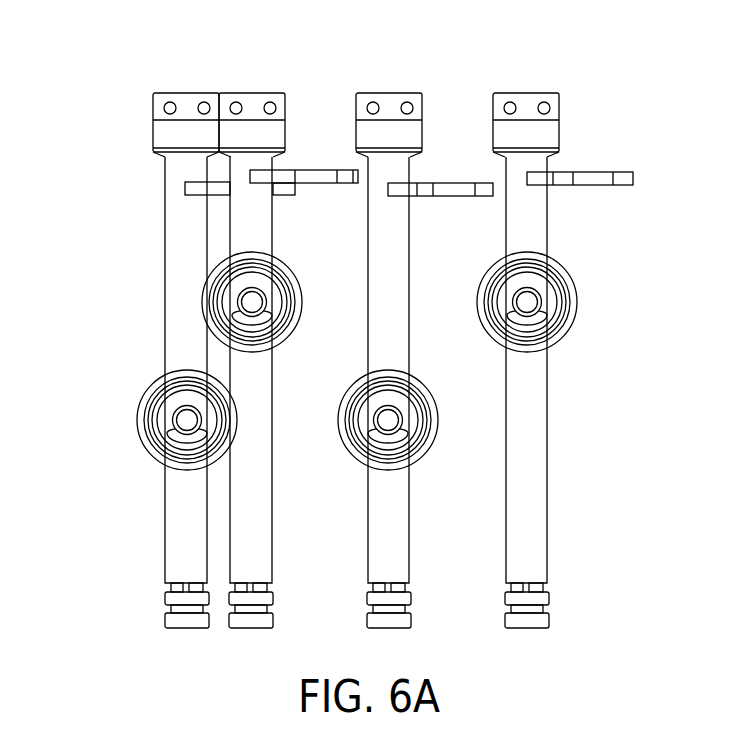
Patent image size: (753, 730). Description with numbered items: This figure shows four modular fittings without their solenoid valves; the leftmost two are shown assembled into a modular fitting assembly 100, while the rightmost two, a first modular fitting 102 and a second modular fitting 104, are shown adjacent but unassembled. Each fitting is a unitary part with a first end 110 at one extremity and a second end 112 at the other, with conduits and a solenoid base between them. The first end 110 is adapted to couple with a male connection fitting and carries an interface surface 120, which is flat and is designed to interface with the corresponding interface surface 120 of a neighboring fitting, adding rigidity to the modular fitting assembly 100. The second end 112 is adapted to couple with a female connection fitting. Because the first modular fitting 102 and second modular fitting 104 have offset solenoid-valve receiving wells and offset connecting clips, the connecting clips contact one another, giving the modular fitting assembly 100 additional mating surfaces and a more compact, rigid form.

The modular fitting assembly 100 is at (143, 43).
The first modular fitting 102 is at (532, 79).
The second modular fitting 104 is at (390, 79).
The first end 110 is at (545, 133).
The second end 112 is at (565, 610).
The interface surface 120 is at (283, 132).